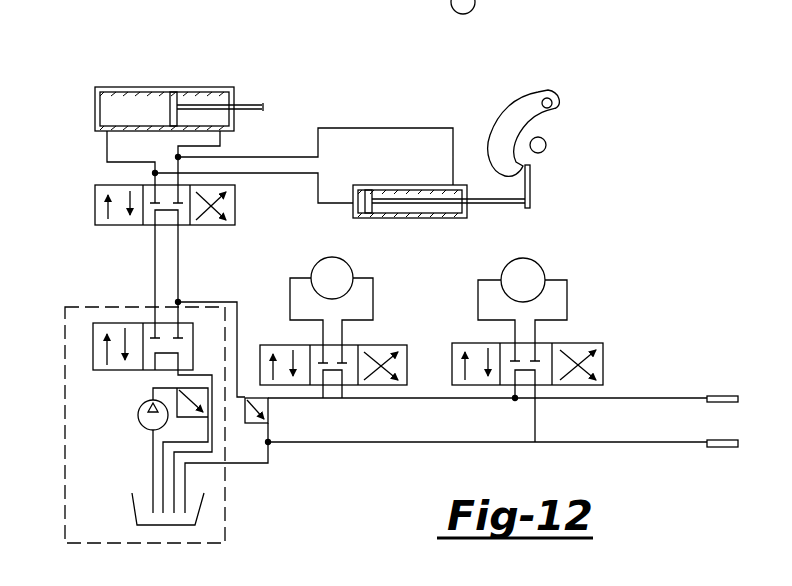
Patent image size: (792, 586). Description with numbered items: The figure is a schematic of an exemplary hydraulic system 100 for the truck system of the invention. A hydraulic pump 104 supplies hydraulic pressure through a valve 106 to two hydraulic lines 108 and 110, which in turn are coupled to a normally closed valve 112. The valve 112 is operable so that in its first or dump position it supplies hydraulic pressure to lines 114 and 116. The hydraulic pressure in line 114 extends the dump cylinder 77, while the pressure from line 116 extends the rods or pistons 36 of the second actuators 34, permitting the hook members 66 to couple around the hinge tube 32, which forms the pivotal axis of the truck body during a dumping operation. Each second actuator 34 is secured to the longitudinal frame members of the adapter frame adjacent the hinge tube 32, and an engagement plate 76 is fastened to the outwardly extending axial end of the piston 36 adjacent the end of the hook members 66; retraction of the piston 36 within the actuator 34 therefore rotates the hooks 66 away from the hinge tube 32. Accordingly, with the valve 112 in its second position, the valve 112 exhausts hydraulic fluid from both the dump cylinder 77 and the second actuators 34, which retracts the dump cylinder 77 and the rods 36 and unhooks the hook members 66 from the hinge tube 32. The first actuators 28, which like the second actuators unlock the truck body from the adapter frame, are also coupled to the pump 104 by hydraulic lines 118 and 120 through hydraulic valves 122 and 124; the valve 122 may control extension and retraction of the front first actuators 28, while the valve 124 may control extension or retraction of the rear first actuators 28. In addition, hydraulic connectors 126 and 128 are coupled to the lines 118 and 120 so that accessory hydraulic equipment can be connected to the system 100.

The first actuator 28 is at (330, 257).
The hinge tube 32 is at (546, 143).
The second actuator 34 is at (420, 218).
The piston 36 is at (497, 204).
The hook member 66 is at (510, 104).
The engagement plate 76 is at (531, 197).
The dump cylinder 77 is at (210, 84).
The hydraulic system 100 is at (632, 217).
The hydraulic pump 104 is at (225, 507).
The valve 106 is at (107, 323).
The hydraulic line 108 is at (155, 250).
The hydraulic line 110 is at (178, 257).
The normally closed valve 112 is at (95, 198).
The hydraulic pressure line 114 is at (107, 148).
The hydraulic pressure line 116 is at (300, 176).
The hydraulic line 118 is at (308, 399).
The hydraulic line 120 is at (366, 443).
The hydraulic valve 122 is at (386, 345).
The hydraulic valve 124 is at (590, 343).
The hydraulic connector 126 is at (720, 396).
The hydraulic connector 128 is at (722, 440).